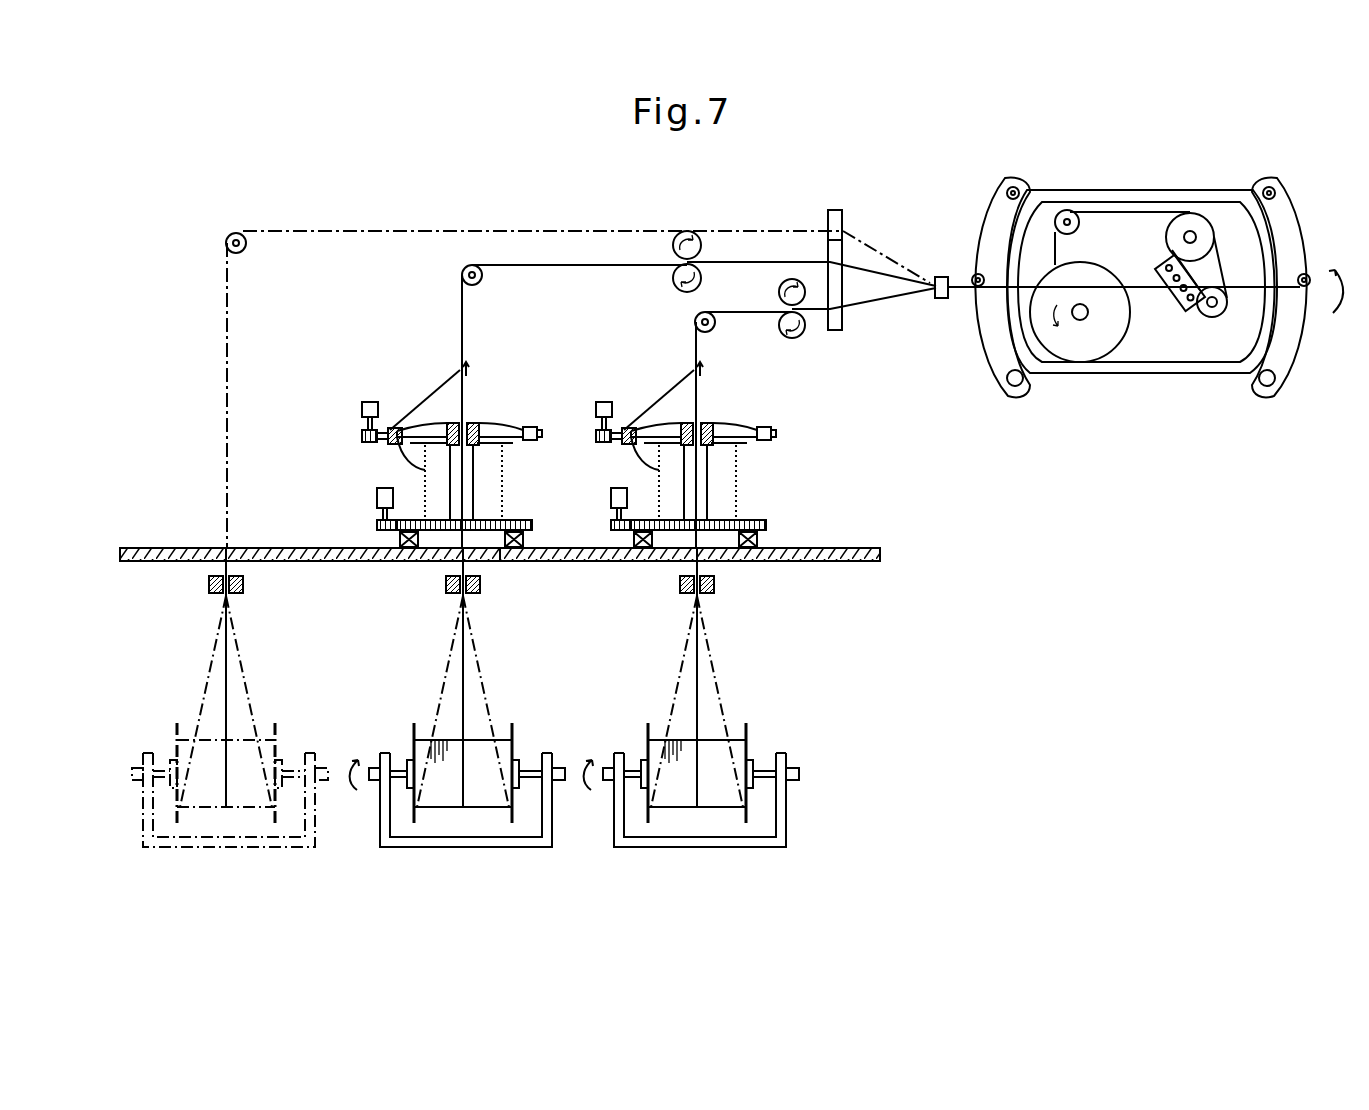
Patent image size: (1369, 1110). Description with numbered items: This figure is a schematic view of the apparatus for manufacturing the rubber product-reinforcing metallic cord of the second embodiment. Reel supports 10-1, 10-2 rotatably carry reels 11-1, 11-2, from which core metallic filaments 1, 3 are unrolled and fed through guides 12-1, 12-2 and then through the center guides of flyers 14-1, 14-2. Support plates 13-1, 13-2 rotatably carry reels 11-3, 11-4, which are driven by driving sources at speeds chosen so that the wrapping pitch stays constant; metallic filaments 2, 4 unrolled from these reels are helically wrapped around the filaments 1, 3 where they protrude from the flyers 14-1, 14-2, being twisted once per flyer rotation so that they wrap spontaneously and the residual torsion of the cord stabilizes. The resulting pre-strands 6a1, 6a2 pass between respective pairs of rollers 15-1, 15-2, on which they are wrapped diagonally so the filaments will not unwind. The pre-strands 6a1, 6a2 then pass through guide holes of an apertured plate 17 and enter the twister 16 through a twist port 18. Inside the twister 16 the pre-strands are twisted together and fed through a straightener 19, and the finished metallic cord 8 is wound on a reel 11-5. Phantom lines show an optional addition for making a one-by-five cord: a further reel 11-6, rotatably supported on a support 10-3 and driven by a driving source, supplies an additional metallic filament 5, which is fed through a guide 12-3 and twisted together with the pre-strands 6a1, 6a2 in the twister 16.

The metallic filament 1 is at (701, 677).
The metallic filament 2 is at (654, 435).
The metallic filament 3 is at (469, 677).
The metallic filament 4 is at (420, 411).
The metallic filament 5 is at (237, 677).
The pre-strand of filaments 6a1 is at (770, 310).
The pre-strand of filaments 6a2 is at (643, 260).
The rubber product-reinforcing metallic cord 8 is at (1137, 212).
The reel support 10-1 is at (728, 800).
The reel support 10-2 is at (485, 819).
The reel support 10-3 is at (247, 819).
The reel 11-1 is at (730, 762).
The reel 11-2 is at (498, 762).
The reel 11-3 is at (741, 482).
The reel 11-4 is at (507, 482).
The reel 11-5 is at (1088, 347).
The reel 11-6 is at (266, 762).
The guide 12-1 is at (728, 601).
The guide 12-2 is at (494, 602).
The guide 12-3 is at (264, 593).
The support plate 13-1 is at (790, 548).
The support plate 13-2 is at (535, 548).
The flyer 14-1 is at (697, 419).
The flyer 14-2 is at (463, 419).
The rollers for preventing untwisting of filaments 15-1 is at (801, 338).
The rollers for preventing untwisting of filaments 15-2 is at (674, 285).
The twister 16 is at (1180, 169).
The apertured plate 17 is at (838, 323).
The twist port 18 is at (937, 300).
The straightener 19 is at (1197, 318).